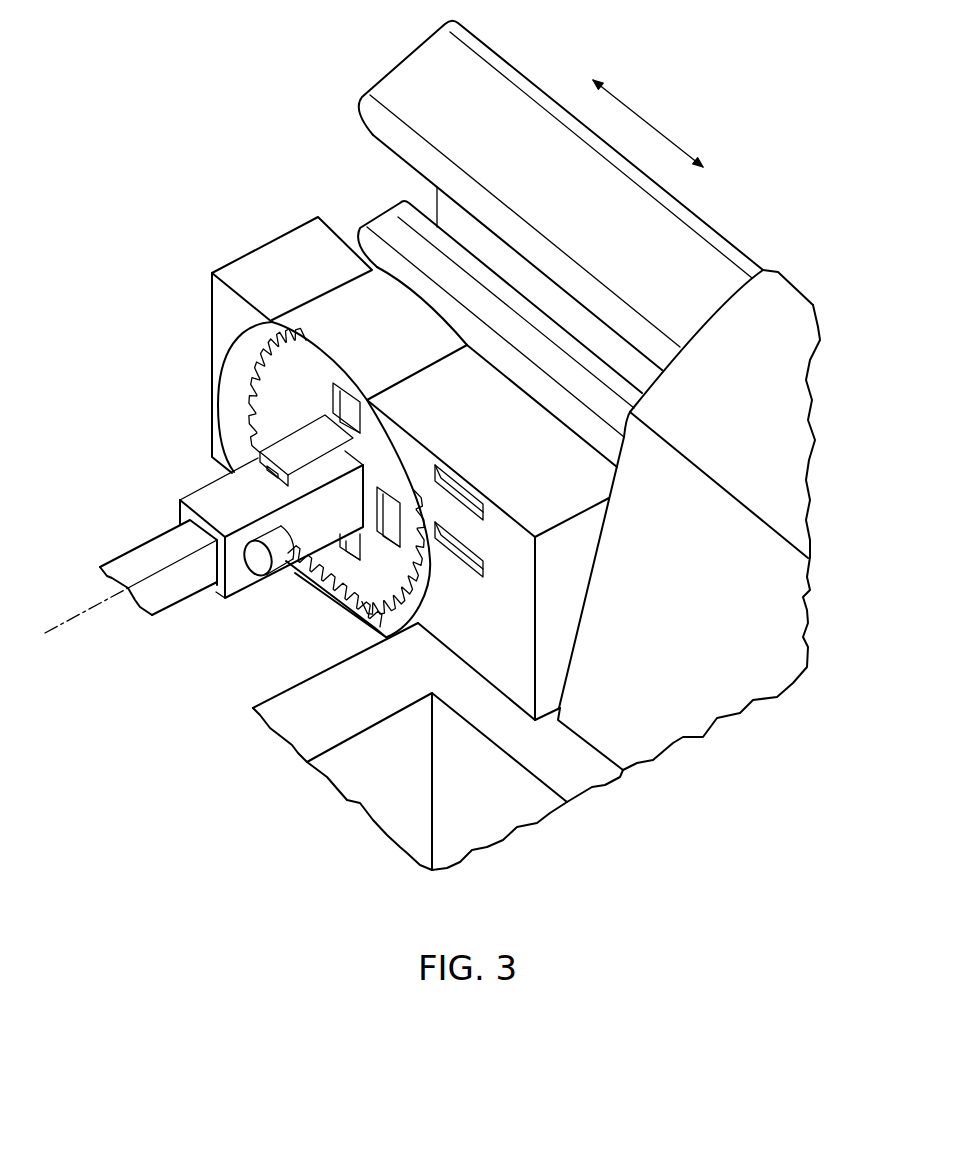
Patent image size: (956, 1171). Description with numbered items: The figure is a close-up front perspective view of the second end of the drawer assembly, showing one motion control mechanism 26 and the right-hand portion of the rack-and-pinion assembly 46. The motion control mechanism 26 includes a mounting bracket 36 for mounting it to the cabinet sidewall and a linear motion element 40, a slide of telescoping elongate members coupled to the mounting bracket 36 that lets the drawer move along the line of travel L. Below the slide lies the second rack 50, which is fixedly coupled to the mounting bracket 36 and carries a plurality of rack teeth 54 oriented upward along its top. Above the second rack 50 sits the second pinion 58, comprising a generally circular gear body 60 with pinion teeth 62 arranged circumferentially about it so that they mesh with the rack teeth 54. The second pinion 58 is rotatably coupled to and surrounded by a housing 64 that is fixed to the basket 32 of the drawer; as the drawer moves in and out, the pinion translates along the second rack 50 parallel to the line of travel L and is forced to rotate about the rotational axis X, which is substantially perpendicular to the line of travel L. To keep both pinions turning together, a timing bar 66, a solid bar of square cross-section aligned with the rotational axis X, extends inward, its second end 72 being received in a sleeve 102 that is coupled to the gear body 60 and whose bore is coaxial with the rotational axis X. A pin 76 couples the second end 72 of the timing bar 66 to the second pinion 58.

The motion control mechanism 26 is at (763, 248).
The basket 32 is at (498, 820).
The mounting bracket 36 is at (407, 70).
The linear motion element 40 is at (392, 220).
The rack-and-pinion assembly 46 is at (216, 545).
The second rack 50 is at (328, 605).
The rack teeth 54 is at (358, 612).
The second pinion 58 is at (380, 467).
The gear body 60 is at (291, 471).
The pinion teeth 62 is at (272, 378).
The housing 64 is at (270, 260).
The timing bar 66 is at (123, 564).
The second end 72 is at (203, 580).
The pin 76 is at (260, 533).
The sleeve 102 is at (200, 497).
The line of travel L is at (660, 122).
The rotational axis X is at (62, 627).